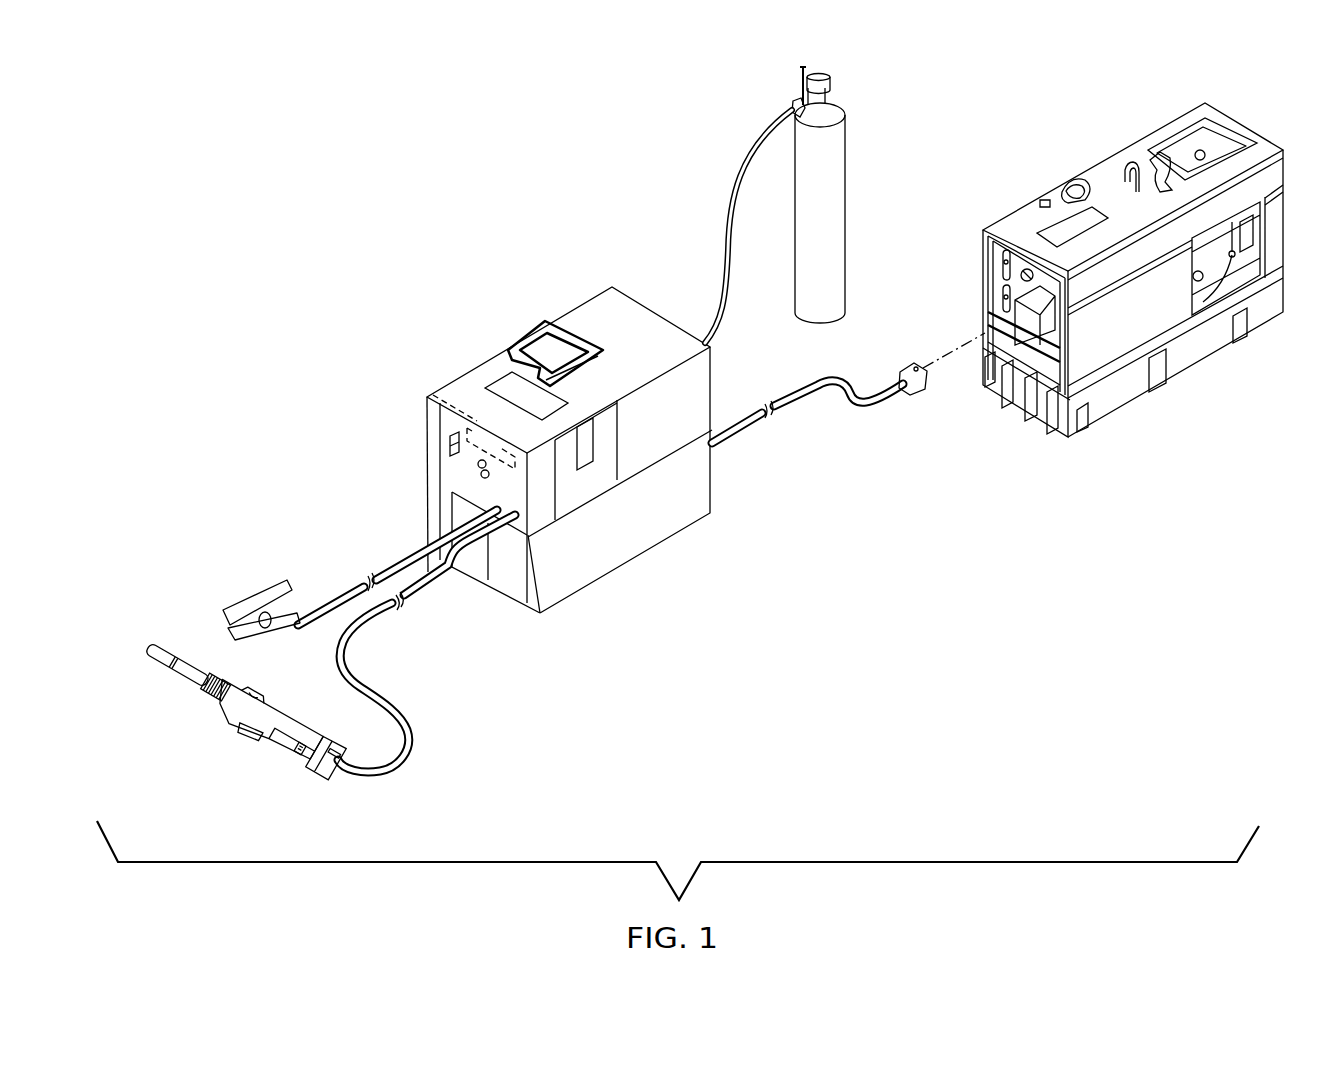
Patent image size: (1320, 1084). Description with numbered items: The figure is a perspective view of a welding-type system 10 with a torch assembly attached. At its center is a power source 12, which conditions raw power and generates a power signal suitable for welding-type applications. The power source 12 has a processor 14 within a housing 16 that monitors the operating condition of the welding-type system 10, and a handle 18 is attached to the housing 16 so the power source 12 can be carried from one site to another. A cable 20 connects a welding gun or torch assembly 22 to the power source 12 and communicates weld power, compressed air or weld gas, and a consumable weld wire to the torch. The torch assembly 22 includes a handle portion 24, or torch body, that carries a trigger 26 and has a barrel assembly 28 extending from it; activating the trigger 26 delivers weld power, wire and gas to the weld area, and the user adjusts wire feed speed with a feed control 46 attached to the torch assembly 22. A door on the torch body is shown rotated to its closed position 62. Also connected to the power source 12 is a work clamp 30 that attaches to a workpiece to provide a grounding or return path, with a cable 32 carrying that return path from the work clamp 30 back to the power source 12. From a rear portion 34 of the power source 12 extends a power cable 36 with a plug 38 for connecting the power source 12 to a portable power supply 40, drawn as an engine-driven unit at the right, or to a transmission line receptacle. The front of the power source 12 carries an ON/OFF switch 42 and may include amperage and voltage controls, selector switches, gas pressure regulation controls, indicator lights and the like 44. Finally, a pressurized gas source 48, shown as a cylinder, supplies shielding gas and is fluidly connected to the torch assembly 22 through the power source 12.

The welding-type system 10 is at (392, 319).
The power source 12 is at (580, 443).
The processor 14 is at (427, 387).
The housing 16 is at (622, 362).
The handle 18 is at (547, 321).
The cable 20 is at (455, 573).
The torch assembly 22 is at (223, 707).
The handle portion 24 is at (288, 728).
The trigger 26 is at (252, 735).
The barrel assembly 28 is at (190, 680).
The work clamp 30 is at (253, 594).
The cable 32 is at (337, 590).
The rear portion 34 is at (500, 383).
The power cable 36 is at (797, 408).
The plug 38 is at (917, 391).
The portable power supply 40 is at (1000, 212).
The ON/OFF switch 42 is at (450, 443).
The controls and indicators 44 is at (515, 481).
The feed control 46 is at (294, 773).
The pressurized gas source 48 is at (806, 213).
The closed position 62 is at (266, 681).